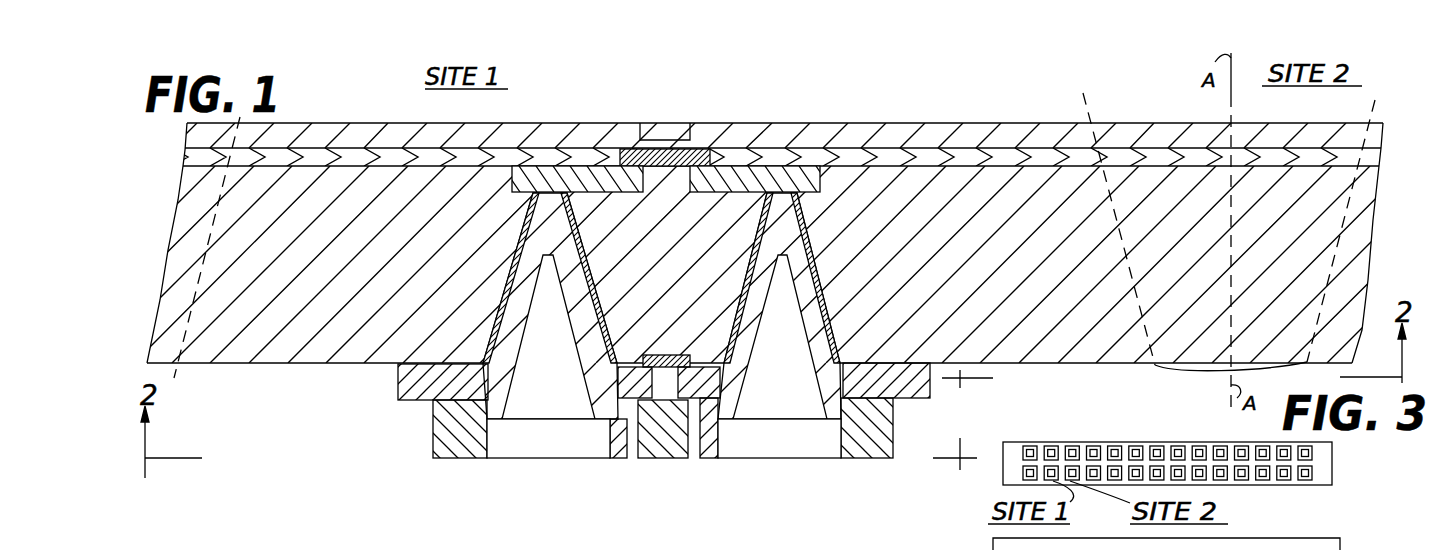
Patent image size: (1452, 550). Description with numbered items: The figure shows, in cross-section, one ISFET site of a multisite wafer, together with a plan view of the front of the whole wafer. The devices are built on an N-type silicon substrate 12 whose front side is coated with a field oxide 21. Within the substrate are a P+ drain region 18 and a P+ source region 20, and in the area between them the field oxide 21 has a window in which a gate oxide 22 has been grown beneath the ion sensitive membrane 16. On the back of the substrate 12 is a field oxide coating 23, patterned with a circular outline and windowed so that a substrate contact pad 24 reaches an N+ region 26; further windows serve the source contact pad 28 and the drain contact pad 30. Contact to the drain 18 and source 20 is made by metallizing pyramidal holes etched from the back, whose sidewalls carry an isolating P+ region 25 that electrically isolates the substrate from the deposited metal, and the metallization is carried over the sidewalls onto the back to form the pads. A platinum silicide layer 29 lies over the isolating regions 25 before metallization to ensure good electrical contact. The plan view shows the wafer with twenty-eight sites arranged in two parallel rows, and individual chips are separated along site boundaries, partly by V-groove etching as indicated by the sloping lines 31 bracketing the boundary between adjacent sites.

In FIG. 1, the N-type silicon substrate 12 is at (987, 276).
In FIG. 3, the N-type silicon substrate 12 is at (1027, 441).
In FIG. 1, the ion sensitive membrane 16 is at (362, 131).
In FIG. 1, the P+ drain region 18 is at (570, 173).
In FIG. 1, the P+ source region 20 is at (738, 172).
In FIG. 1, the field oxide 21 is at (800, 158).
In FIG. 1, the gate oxide 22 is at (657, 157).
In FIG. 1, the field oxide coating 23 is at (640, 373).
In FIG. 1, the substrate contact pad 24 is at (668, 444).
In FIG. 1, the isolating P+ region 25 is at (507, 243).
In FIG. 1, the N+ region 26 is at (668, 356).
In FIG. 1, the source contact pad 28 is at (868, 445).
In FIG. 1, the platinum silicide layer 29 is at (800, 303).
In FIG. 1, the drain contact pad 30 is at (460, 450).
In FIG. 3, the drain contact pad 30 is at (1197, 544).
In FIG. 1, the sloping lines 31 is at (1232, 370).